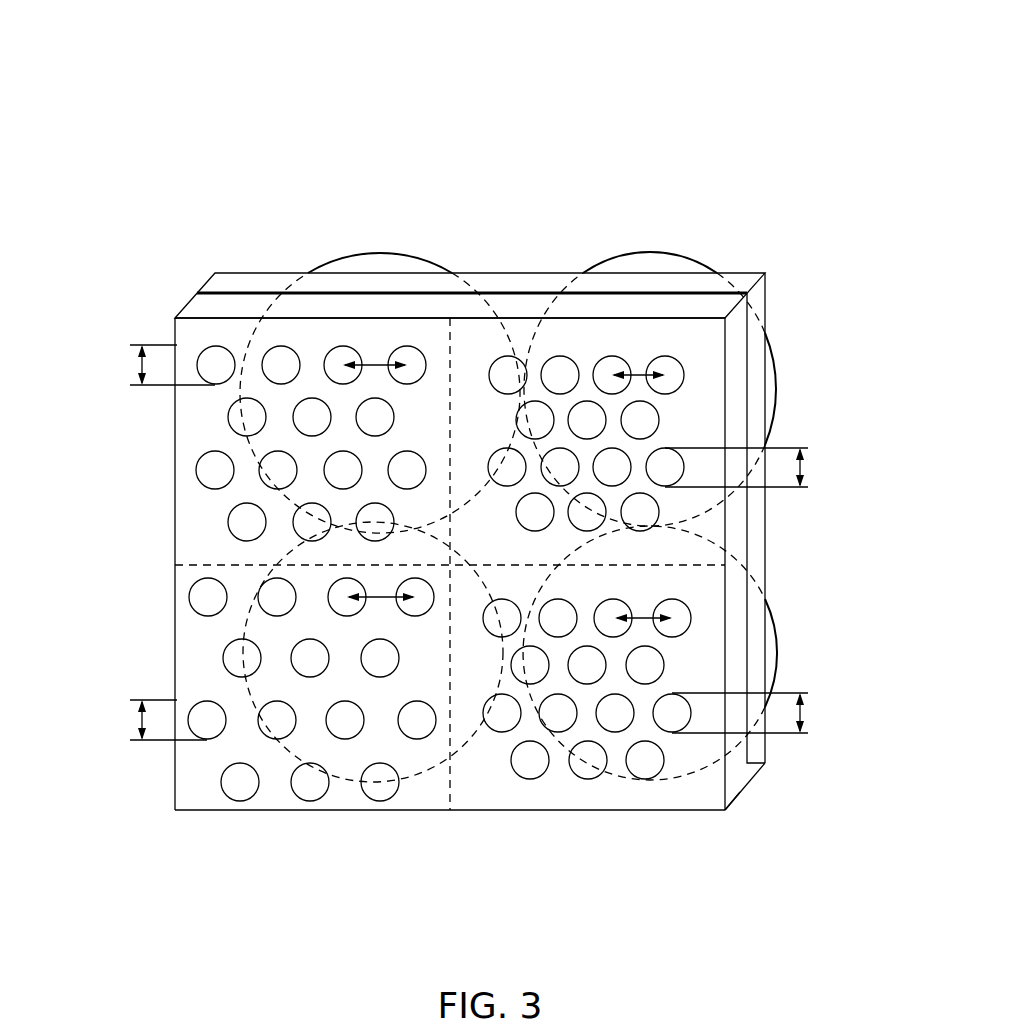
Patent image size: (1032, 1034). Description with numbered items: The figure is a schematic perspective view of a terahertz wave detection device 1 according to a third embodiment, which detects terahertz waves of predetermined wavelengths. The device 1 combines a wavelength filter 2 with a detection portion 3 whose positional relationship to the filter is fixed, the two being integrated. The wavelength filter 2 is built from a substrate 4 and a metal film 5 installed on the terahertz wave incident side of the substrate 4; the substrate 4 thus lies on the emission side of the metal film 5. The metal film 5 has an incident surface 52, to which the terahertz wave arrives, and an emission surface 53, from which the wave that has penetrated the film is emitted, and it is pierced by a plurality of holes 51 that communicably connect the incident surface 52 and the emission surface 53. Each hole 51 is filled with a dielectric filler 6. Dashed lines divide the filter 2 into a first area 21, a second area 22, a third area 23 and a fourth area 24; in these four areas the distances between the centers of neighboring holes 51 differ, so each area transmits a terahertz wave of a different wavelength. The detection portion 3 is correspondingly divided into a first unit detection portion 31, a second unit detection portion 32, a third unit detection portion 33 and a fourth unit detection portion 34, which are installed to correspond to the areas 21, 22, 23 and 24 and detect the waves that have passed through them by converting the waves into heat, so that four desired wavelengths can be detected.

The terahertz wave detection device 1 is at (661, 120).
The wavelength filter 2 is at (166, 500).
The detection portion 3 is at (820, 378).
The substrate 4 is at (230, 282).
The metal film 5 is at (190, 327).
The filler 6 is at (279, 364).
The first area 21 is at (710, 507).
The second area 22 is at (670, 792).
The third area 23 is at (192, 413).
The fourth area 24 is at (190, 655).
The first unit detection portion 31 is at (785, 348).
The second unit detection portion 32 is at (785, 637).
The third unit detection portion 33 is at (392, 260).
The fourth unit detection portion 34 is at (437, 768).
The hole 51 is at (345, 362).
The incident surface 52 is at (703, 790).
The emission surface 53 is at (766, 763).